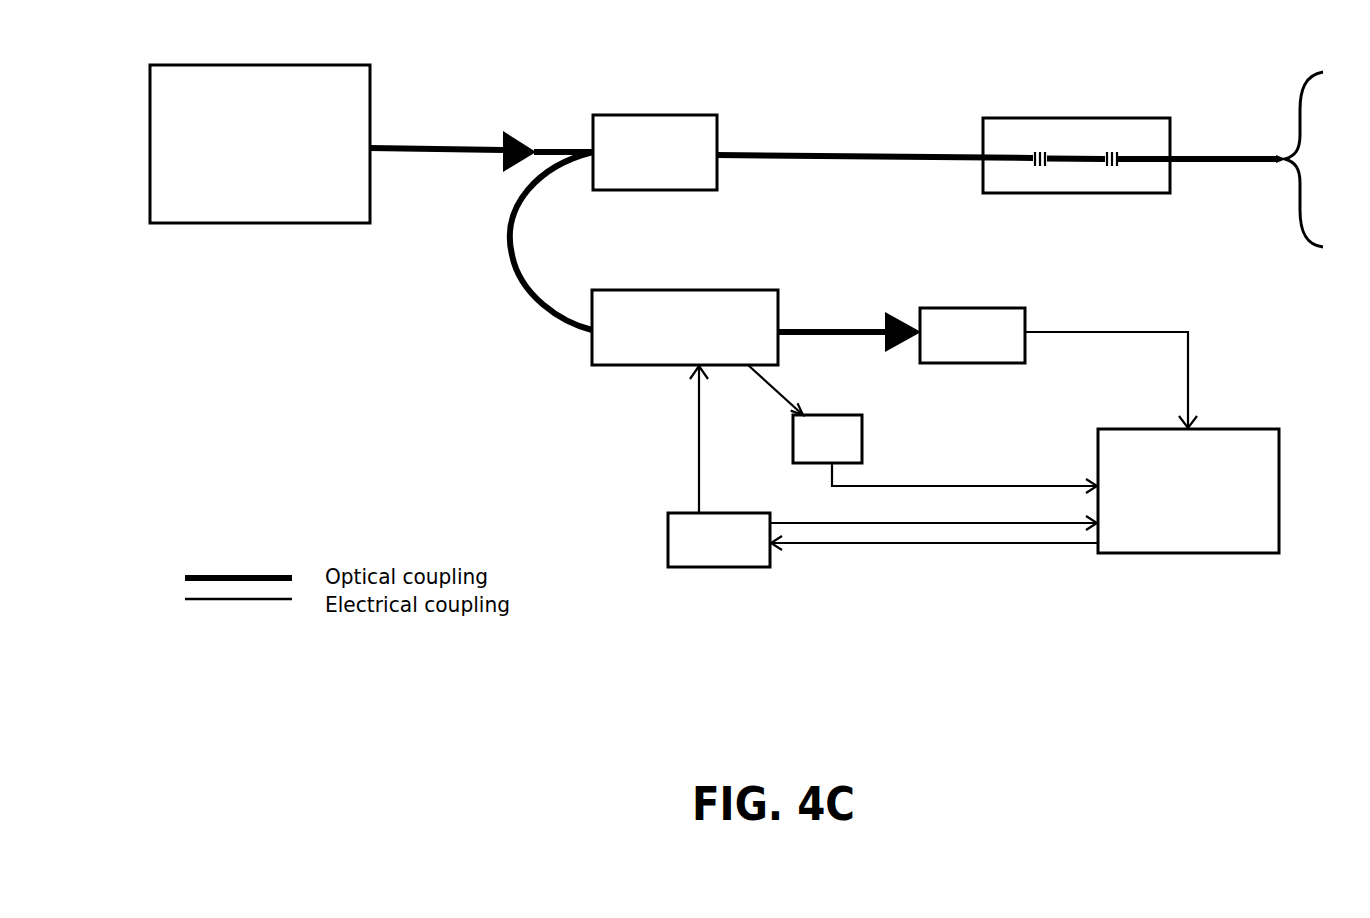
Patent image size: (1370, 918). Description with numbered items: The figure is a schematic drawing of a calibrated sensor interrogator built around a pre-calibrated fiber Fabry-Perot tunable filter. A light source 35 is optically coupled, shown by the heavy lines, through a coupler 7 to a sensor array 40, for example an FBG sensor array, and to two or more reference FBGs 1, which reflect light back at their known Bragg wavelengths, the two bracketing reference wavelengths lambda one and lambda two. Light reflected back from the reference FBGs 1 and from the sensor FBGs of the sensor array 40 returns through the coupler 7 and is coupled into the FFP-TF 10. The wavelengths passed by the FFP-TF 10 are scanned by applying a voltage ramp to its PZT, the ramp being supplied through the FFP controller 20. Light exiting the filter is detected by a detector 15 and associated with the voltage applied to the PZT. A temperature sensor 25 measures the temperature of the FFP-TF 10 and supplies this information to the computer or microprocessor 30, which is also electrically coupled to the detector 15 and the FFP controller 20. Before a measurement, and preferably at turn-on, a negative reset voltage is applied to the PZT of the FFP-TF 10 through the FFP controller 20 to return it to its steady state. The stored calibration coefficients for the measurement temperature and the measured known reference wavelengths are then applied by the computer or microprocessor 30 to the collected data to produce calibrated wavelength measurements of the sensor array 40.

The light source 35 is at (267, 190).
The coupler 7 is at (652, 138).
The reference FBGs 1 is at (1003, 175).
The sensor array 40 is at (1328, 162).
The FFP-TF 10 is at (667, 340).
The detector 15 is at (958, 330).
The temperature sensor 25 is at (828, 438).
The FFP controller 20 is at (728, 543).
The computer or microprocessor 30 is at (1242, 458).